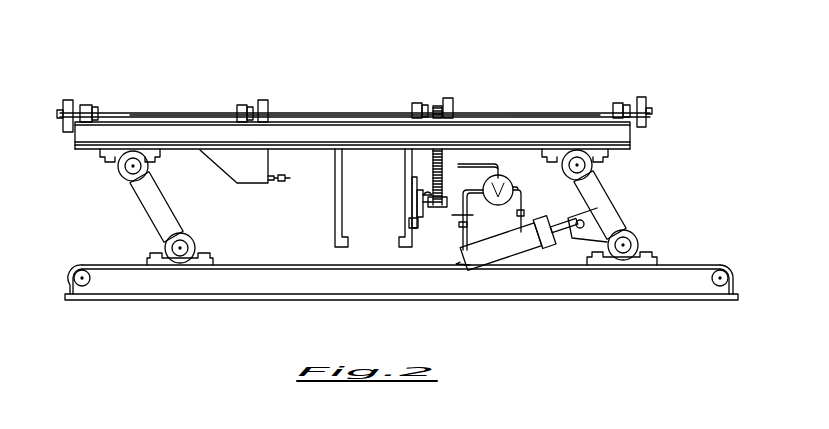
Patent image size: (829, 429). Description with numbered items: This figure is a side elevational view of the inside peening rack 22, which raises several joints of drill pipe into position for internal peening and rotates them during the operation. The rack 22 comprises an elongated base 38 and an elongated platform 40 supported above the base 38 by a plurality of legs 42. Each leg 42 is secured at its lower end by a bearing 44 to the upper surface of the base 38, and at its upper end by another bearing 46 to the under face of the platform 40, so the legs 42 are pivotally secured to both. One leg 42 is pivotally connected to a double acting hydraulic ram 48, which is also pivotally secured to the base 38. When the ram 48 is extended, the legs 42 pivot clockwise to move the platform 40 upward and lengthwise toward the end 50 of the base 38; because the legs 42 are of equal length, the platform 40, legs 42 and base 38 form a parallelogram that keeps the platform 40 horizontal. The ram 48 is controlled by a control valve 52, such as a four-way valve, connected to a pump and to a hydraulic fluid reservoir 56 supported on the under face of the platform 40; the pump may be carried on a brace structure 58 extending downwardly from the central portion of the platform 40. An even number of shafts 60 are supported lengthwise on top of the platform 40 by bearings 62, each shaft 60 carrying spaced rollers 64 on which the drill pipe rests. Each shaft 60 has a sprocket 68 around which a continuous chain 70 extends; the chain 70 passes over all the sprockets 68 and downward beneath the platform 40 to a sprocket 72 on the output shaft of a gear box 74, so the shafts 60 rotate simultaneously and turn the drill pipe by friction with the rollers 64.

The inside peening rack 22 is at (70, 142).
The elongated base 38 is at (75, 268).
The elongated platform 40 is at (98, 145).
The legs 42 is at (150, 208).
The bearing 44 is at (162, 250).
The bearing 46 is at (110, 162).
The double acting hydraulic ram 48 is at (518, 252).
The end of the base 50 is at (735, 265).
The control valve 52 is at (508, 181).
The hydraulic fluid reservoir 56 is at (242, 173).
The brace structure 58 is at (381, 187).
The shafts 60 is at (348, 112).
The bearings 62 is at (88, 108).
The rollers 64 is at (70, 100).
The sprocket 68 is at (440, 104).
The continuous chain 70 is at (433, 156).
The sprocket 72 is at (417, 196).
The gear box 74 is at (409, 216).